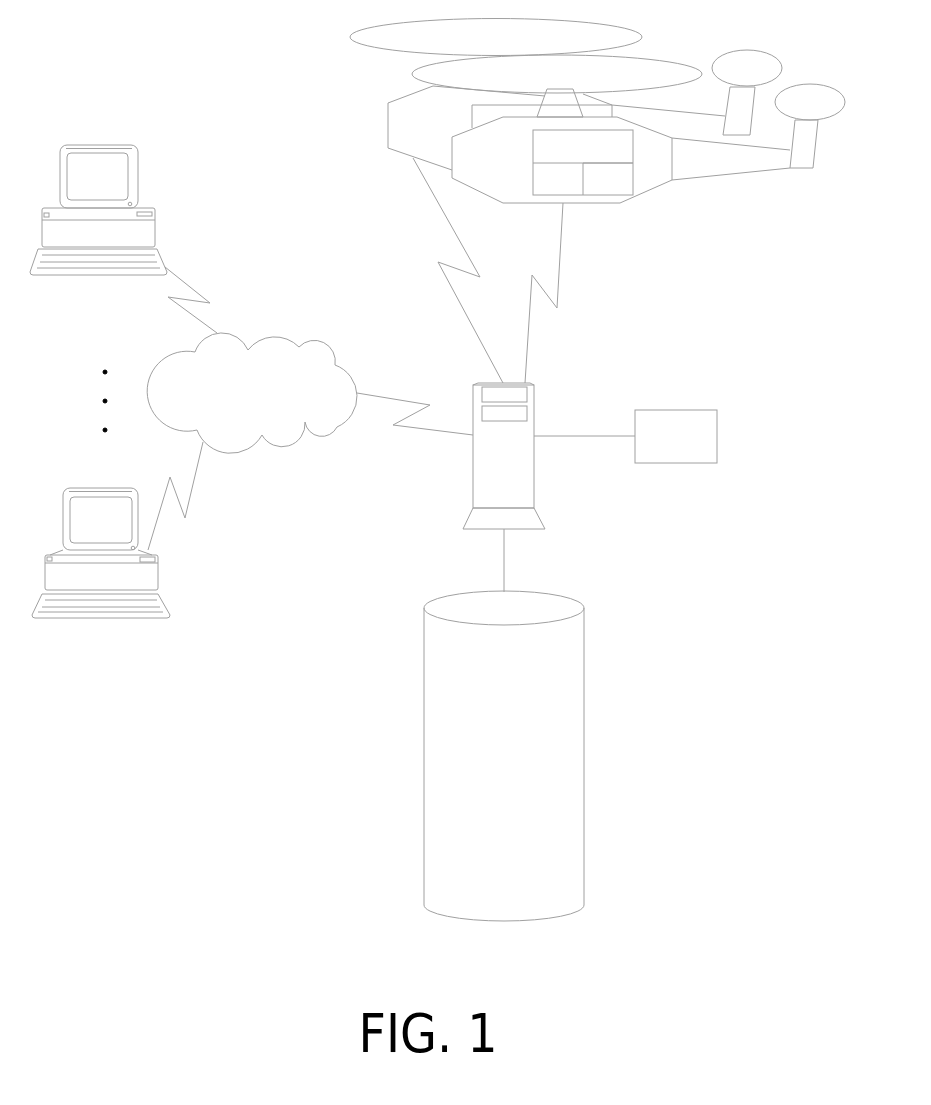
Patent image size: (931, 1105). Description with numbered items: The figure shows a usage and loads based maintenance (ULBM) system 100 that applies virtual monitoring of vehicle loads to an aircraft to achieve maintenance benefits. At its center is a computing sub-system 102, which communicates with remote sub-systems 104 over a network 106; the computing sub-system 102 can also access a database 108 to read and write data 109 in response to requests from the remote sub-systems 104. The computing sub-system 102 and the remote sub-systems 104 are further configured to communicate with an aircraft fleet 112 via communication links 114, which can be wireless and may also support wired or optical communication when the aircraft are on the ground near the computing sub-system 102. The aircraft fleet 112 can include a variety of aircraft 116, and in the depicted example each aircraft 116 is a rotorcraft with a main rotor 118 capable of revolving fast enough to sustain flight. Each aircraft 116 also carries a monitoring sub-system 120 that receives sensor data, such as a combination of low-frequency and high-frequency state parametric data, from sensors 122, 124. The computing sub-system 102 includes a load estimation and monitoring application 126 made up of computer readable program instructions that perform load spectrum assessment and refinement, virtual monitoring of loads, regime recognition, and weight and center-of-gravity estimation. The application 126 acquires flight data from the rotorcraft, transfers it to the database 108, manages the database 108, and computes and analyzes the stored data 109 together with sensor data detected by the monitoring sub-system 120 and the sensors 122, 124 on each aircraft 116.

The ULBM system 100 is at (137, 51).
The computing sub-system 102 is at (522, 485).
The remote sub-systems 104 is at (116, 188).
The network 106 is at (265, 400).
The database 108 is at (531, 747).
The data 109 is at (526, 695).
The aircraft fleet 112 is at (568, 111).
The communication links 114 is at (470, 258).
The aircraft 116 is at (435, 133).
The main rotor 118 is at (576, 80).
The monitoring sub-system 120 is at (601, 158).
The sensor 122 is at (575, 190).
The sensor 124 is at (626, 190).
The load estimation and monitoring application 126 is at (694, 448).